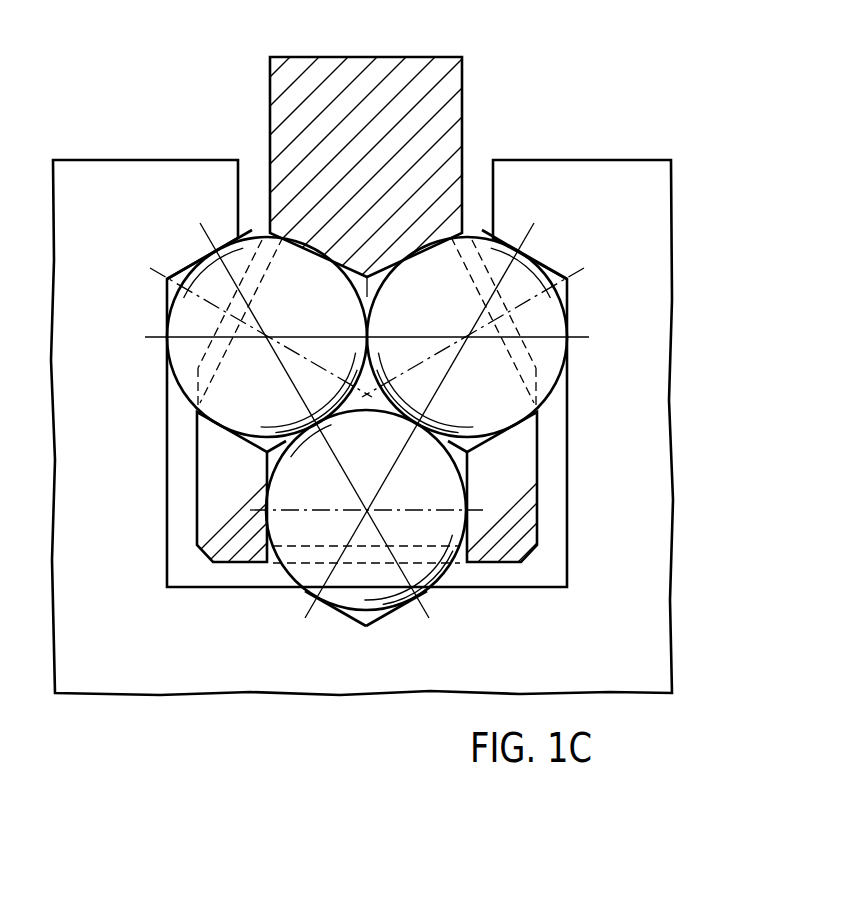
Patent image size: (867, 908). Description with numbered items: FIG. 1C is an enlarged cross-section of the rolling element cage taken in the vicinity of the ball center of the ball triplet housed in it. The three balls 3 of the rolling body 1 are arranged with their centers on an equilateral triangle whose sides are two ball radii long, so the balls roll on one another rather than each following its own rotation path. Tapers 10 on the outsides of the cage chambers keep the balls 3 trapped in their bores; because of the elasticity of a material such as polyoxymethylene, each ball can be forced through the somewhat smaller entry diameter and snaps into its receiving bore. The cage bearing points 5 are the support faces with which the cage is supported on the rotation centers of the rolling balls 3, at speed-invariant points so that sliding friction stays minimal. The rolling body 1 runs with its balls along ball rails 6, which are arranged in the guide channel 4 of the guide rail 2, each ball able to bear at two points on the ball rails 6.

The rolling body 1 is at (455, 103).
The guide rail 2 is at (662, 205).
The ball 3 is at (178, 366).
The guide channel 4 is at (518, 579).
The cage bearing point 5 is at (313, 253).
The ball rail 6 is at (217, 250).
The taper 10 is at (279, 232).